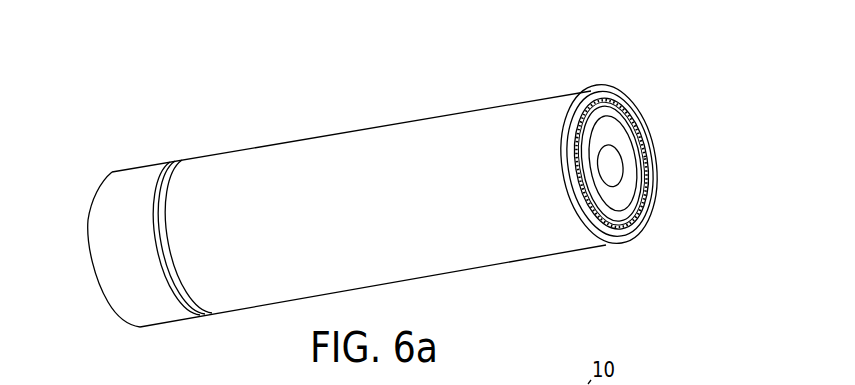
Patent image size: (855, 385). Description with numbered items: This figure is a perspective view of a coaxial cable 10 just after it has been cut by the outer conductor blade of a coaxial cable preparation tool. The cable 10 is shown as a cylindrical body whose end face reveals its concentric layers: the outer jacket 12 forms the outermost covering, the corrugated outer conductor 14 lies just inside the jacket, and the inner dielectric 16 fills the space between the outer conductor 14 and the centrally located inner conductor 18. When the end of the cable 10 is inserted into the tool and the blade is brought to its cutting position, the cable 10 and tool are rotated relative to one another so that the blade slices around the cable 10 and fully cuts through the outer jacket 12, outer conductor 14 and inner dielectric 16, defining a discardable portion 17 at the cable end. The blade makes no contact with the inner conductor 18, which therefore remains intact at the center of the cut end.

The coaxial cable 10 is at (256, 106).
The outer jacket 12 is at (603, 90).
The corrugated outer conductor 14 is at (625, 118).
The inner dielectric 16 is at (622, 147).
The discardable portion 17 is at (110, 205).
The inner conductor 18 is at (605, 166).